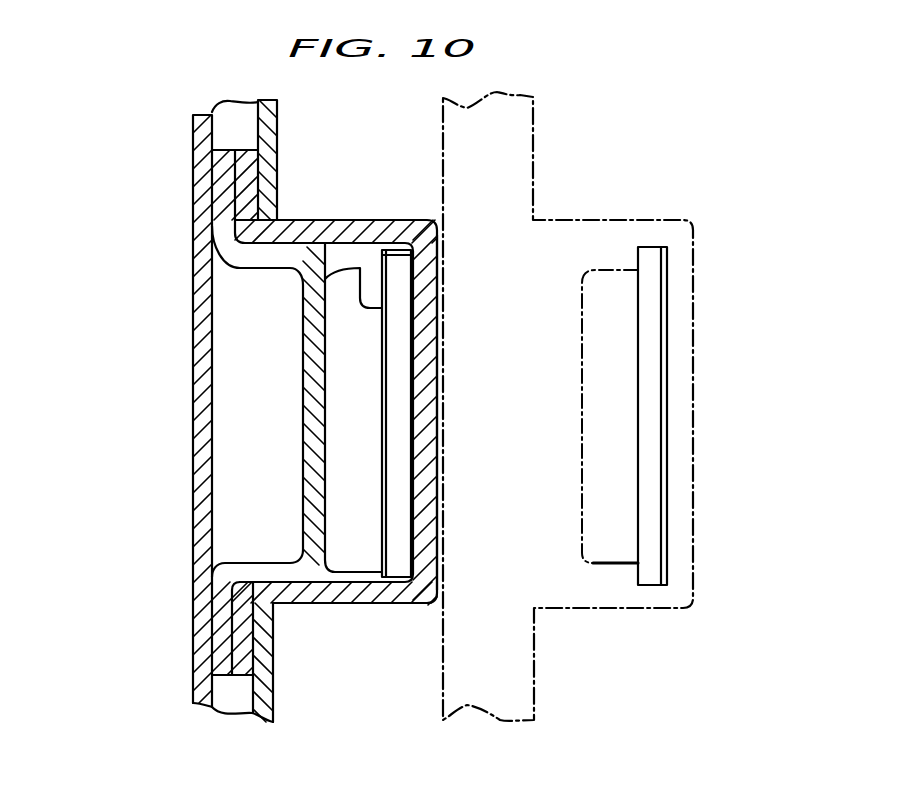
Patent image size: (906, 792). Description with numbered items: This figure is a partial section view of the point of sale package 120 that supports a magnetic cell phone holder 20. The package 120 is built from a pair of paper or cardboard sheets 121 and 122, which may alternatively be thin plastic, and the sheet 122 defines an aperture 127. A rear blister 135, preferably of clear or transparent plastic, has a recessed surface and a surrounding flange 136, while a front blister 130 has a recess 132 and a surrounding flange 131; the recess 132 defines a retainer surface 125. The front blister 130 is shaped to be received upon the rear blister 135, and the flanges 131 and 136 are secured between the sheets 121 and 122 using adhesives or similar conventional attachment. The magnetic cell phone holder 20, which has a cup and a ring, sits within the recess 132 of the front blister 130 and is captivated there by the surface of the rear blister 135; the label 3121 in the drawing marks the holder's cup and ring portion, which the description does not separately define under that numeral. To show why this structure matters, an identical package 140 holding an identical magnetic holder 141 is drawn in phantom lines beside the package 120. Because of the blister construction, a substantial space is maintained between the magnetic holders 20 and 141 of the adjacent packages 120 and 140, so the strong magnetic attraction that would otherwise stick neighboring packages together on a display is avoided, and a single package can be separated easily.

The magnetic cell phone holder 20 is at (367, 595).
The package 120 is at (181, 207).
The sheet 121 is at (190, 178).
The sheet 122 is at (278, 125).
The retainer surface 125 is at (438, 390).
The aperture 127 is at (270, 601).
The front blister 130 is at (339, 209).
The flange 131 is at (272, 166).
The recess 132 is at (412, 327).
The rear blister 135 is at (292, 372).
The flange 136 is at (193, 226).
The package 140 is at (578, 619).
The magnetic holder 141 is at (676, 416).
The cell tab 3121 is at (384, 241).